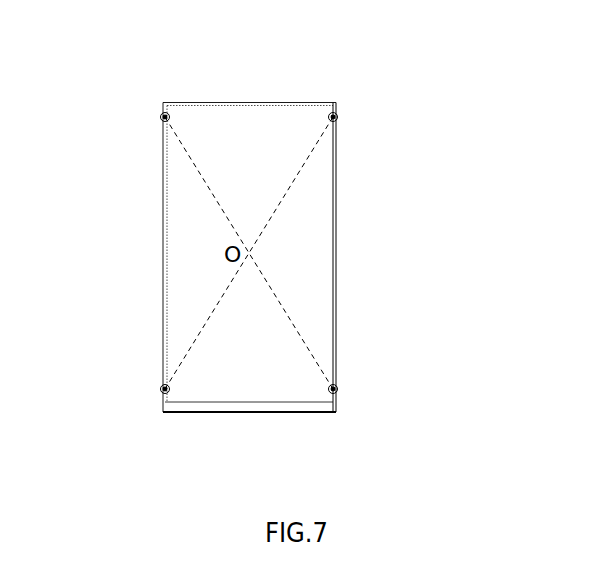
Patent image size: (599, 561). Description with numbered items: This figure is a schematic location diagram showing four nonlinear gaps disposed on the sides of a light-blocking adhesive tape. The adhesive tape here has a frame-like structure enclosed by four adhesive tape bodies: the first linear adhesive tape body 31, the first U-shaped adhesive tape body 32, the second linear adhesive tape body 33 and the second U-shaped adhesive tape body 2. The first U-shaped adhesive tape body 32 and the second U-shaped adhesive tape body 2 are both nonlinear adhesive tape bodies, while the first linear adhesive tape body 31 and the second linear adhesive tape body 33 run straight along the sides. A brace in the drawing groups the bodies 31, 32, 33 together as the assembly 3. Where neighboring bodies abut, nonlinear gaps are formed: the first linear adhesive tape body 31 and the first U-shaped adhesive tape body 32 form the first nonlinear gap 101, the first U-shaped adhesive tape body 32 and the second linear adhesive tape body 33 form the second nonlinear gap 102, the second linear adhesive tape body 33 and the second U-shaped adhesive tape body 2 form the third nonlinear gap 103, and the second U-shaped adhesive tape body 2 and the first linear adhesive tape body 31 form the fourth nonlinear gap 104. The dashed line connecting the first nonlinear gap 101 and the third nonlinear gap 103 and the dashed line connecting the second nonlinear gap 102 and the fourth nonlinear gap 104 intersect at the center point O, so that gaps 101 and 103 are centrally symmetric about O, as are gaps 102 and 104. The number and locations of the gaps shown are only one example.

The second U-shaped adhesive tape body 2 is at (325, 409).
The panel assembly 3 is at (354, 258).
The first linear adhesive tape body 31 is at (165, 219).
The first U-shaped adhesive tape body 32 is at (275, 104).
The second linear adhesive tape body 33 is at (512, 208).
The first nonlinear gap 101 is at (161, 114).
The second nonlinear gap 102 is at (337, 114).
The third nonlinear gap 103 is at (330, 392).
The fourth nonlinear gap 104 is at (161, 392).